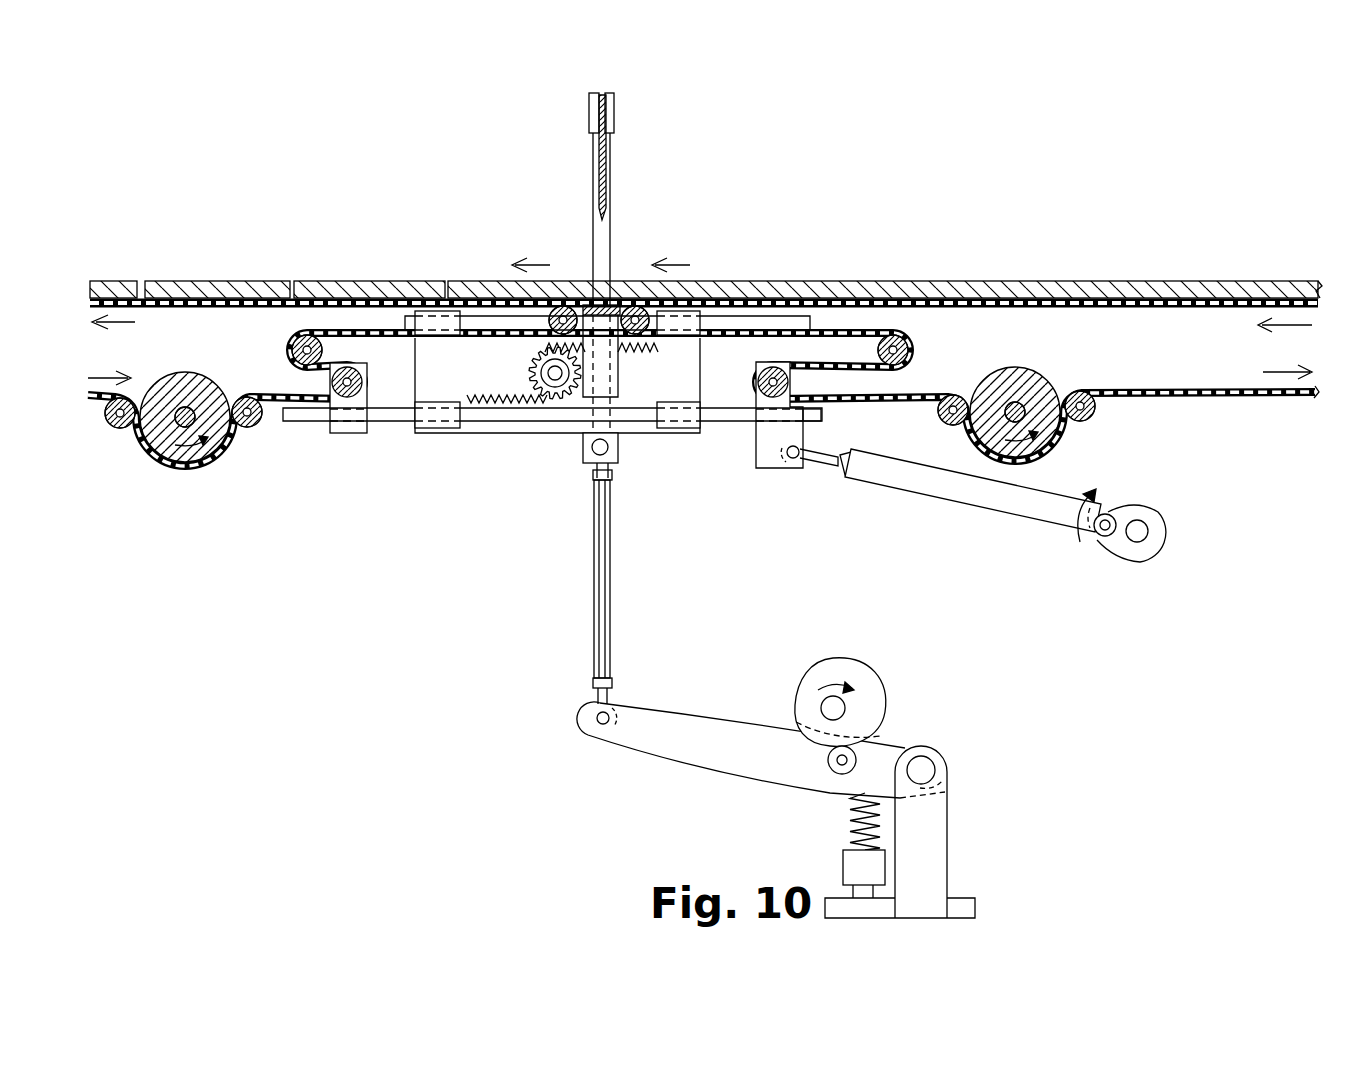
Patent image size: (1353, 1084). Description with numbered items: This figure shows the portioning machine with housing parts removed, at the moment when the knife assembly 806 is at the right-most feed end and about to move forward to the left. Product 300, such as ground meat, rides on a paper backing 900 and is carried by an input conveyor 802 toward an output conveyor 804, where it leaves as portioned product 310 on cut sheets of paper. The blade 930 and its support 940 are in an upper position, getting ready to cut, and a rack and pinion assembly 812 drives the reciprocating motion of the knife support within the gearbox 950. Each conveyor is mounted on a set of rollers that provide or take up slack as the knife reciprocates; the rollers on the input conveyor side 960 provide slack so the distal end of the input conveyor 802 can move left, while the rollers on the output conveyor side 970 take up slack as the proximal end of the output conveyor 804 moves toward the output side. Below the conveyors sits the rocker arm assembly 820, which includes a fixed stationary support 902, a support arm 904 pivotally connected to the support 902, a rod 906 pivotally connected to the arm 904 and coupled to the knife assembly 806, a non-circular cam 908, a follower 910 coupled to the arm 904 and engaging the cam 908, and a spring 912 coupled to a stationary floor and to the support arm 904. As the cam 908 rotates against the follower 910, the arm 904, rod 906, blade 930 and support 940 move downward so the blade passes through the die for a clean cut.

The product 300 is at (1077, 281).
The portioned product 310 is at (283, 280).
The paper backing 900 is at (365, 292).
The output conveyor side 970 is at (138, 270).
The input conveyor side 960 is at (1182, 262).
The input conveyor 802 is at (1164, 306).
The output conveyor 804 is at (235, 310).
The knife assembly 806 is at (575, 140).
The blade 930 is at (605, 165).
The blade support 940 is at (612, 229).
The gearbox 950 is at (447, 436).
The rack and pinion assembly 812 is at (527, 386).
The rod 906 is at (613, 533).
The support arm 904 is at (712, 713).
The cam 908 is at (858, 658).
The follower 910 is at (878, 756).
The spring 912 is at (852, 804).
The stationary support 902 is at (946, 827).
The rocker arm assembly 820 is at (782, 675).